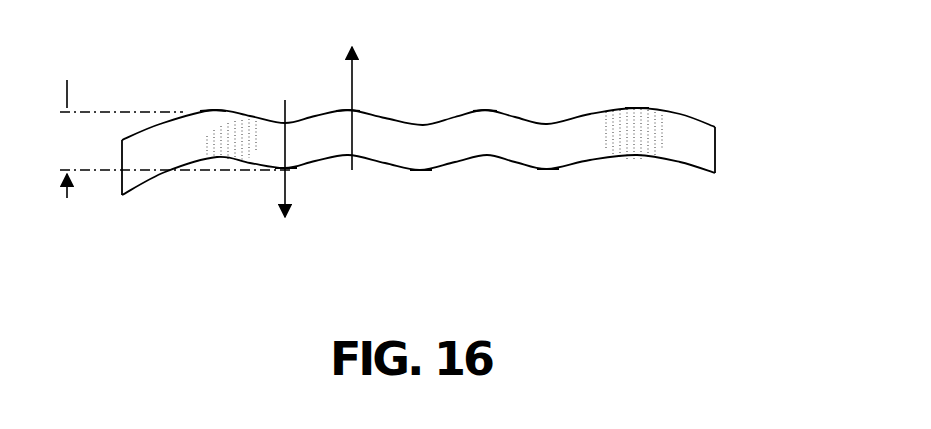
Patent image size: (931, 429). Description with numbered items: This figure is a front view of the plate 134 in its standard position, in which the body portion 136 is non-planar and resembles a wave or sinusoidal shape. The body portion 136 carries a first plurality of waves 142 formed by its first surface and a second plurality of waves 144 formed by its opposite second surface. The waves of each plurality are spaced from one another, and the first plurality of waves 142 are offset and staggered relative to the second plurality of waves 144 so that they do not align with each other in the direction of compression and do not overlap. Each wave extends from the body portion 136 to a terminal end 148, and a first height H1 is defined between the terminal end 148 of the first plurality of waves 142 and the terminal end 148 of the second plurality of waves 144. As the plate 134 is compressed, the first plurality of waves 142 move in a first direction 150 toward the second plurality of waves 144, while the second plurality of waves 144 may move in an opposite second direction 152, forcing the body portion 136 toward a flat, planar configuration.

The plate 134 is at (702, 69).
The body portion 136 is at (718, 157).
The first plurality of waves 142 is at (362, 110).
The second plurality of waves 144 is at (290, 172).
The terminal end 148 is at (123, 108).
The first direction 150 is at (285, 190).
The second direction 152 is at (350, 78).
The first height H1 is at (65, 139).